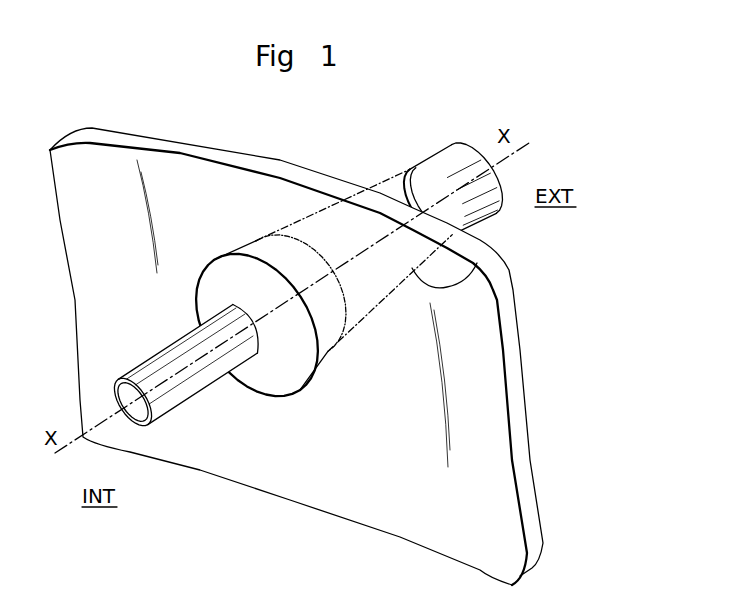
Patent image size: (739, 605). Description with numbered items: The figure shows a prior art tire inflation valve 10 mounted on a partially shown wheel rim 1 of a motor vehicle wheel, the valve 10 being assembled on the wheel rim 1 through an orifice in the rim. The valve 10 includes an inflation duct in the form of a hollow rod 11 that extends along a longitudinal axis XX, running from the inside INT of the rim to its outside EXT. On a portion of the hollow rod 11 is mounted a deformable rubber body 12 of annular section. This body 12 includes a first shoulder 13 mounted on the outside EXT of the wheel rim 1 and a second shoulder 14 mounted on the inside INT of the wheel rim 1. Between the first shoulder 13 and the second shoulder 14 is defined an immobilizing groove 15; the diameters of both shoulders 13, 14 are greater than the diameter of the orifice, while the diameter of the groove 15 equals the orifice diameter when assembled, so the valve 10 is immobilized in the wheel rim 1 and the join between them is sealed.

The wheel rim 1 is at (512, 357).
The inflation valve 10 is at (380, 174).
The hollow rod 11 is at (177, 393).
The deformable rubber body 12 is at (480, 257).
The first shoulder 13 is at (340, 322).
The second shoulder 14 is at (298, 380).
The immobilizing groove 15 is at (327, 369).